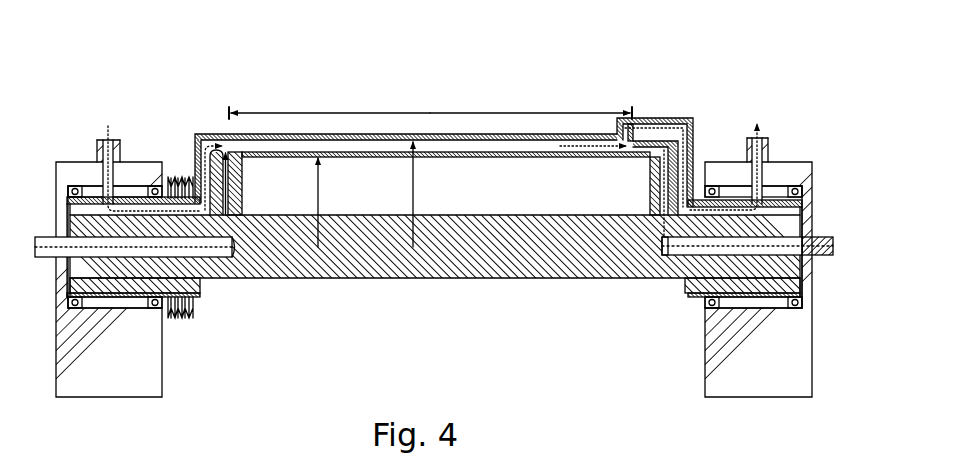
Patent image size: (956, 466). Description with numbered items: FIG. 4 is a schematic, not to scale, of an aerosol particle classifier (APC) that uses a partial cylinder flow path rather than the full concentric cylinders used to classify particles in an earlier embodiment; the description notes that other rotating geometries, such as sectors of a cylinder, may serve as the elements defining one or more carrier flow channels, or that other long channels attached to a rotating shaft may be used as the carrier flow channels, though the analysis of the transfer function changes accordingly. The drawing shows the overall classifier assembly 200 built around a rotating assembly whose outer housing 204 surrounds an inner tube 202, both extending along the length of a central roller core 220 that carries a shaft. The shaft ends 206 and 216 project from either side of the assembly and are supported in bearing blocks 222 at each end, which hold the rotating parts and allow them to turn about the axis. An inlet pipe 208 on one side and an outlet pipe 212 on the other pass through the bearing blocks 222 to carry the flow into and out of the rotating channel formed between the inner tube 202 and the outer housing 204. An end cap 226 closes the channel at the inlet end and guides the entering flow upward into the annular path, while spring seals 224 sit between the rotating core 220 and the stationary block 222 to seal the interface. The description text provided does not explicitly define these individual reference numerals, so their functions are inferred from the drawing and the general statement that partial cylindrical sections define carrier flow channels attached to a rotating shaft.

The roller assembly 200 is at (447, 233).
The inner tube 202 is at (479, 158).
The outer housing 204 is at (557, 133).
The shaft end 206 is at (30, 246).
The inlet pipe 208 is at (108, 127).
The outlet pipe 212 is at (764, 116).
The shaft end 216 is at (840, 247).
The roller core 220 is at (410, 280).
The bearing block 222 is at (157, 306).
The spring seal 224 is at (180, 318).
The end cap 226 is at (200, 165).